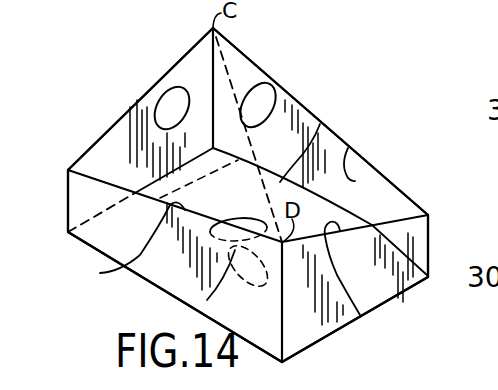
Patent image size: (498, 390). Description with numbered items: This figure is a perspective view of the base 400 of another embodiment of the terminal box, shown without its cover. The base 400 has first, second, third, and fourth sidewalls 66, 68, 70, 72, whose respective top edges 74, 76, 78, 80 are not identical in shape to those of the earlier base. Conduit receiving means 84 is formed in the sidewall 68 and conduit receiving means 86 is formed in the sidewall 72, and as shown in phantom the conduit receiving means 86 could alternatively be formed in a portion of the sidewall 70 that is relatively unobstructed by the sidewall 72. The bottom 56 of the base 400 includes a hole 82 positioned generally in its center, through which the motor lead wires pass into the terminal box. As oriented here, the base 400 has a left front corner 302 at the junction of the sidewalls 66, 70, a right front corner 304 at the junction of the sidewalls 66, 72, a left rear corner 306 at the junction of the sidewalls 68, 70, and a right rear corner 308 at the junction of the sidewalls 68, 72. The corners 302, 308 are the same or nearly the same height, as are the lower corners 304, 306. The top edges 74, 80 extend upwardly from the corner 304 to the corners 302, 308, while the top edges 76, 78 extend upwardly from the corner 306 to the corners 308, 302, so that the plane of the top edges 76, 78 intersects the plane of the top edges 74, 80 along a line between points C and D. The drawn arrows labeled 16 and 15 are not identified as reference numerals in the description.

The base 400 is at (432, 172).
The right rear corner 308 is at (208, 57).
The second sidewall 68 is at (120, 148).
The top edge of second sidewall 76 is at (138, 100).
The conduit receiving means 84 is at (174, 96).
The conduit receiving means 86 is at (262, 96).
The left rear corner 306 is at (67, 197).
The bottom 56 is at (320, 124).
The top edge of fourth sidewall 80 is at (348, 148).
The fourth sidewall 72 is at (353, 155).
The hole 82 is at (242, 222).
The third sidewall 70 is at (113, 226).
The top edge of third sidewall 78 is at (127, 246).
The lower front edge 16 is at (157, 284).
The left front corner 302 is at (282, 322).
The top edge of first sidewall 74 is at (360, 315).
The lower right edge 15 is at (379, 315).
The right front corner 304 is at (460, 232).
The first sidewall 66 is at (385, 290).